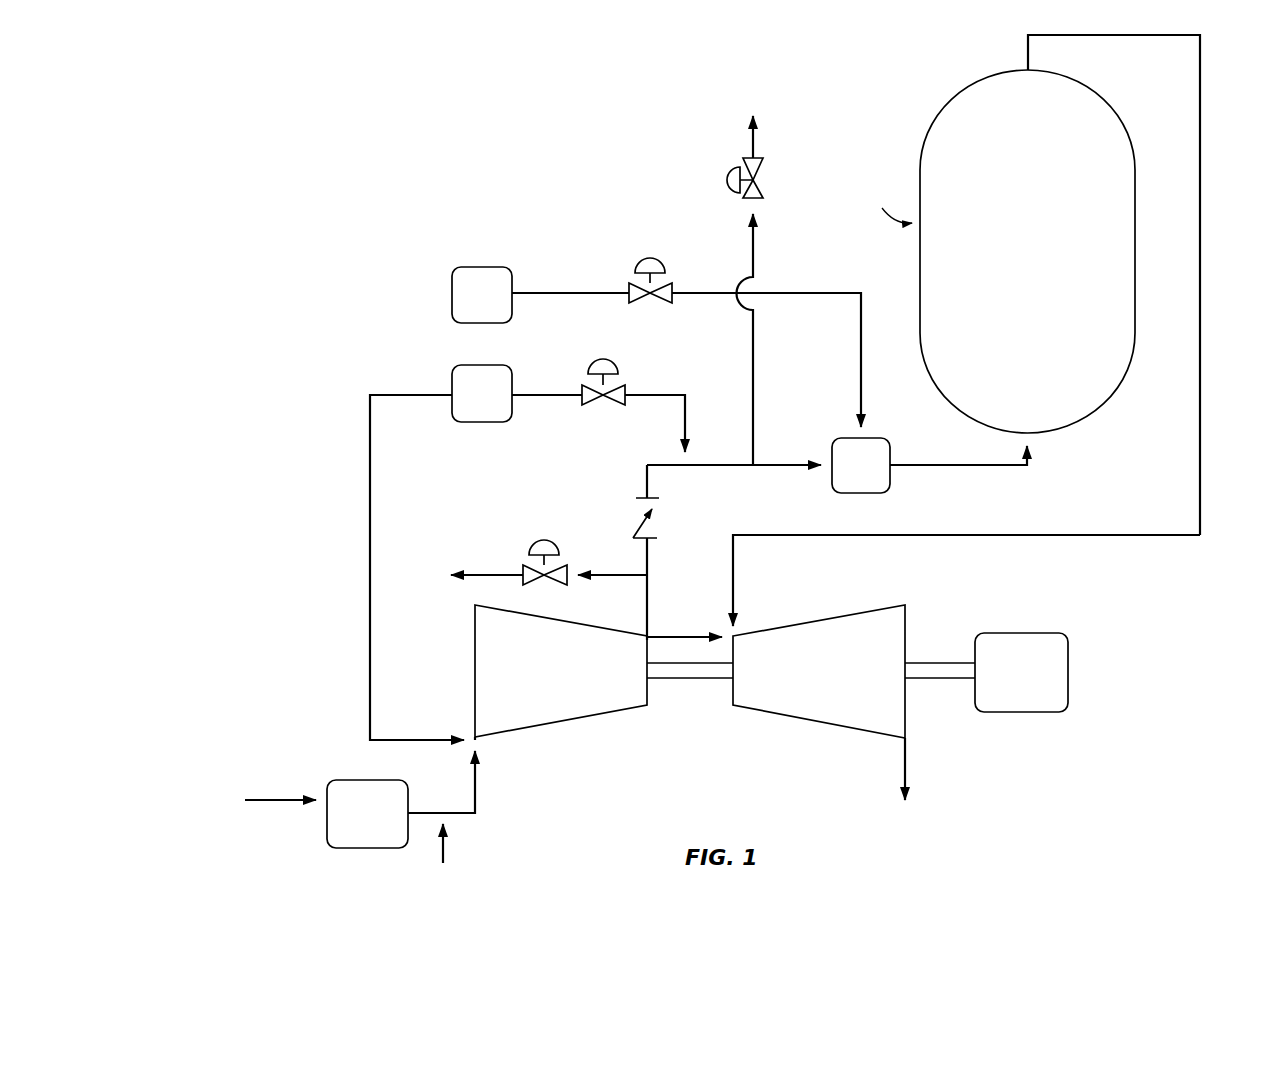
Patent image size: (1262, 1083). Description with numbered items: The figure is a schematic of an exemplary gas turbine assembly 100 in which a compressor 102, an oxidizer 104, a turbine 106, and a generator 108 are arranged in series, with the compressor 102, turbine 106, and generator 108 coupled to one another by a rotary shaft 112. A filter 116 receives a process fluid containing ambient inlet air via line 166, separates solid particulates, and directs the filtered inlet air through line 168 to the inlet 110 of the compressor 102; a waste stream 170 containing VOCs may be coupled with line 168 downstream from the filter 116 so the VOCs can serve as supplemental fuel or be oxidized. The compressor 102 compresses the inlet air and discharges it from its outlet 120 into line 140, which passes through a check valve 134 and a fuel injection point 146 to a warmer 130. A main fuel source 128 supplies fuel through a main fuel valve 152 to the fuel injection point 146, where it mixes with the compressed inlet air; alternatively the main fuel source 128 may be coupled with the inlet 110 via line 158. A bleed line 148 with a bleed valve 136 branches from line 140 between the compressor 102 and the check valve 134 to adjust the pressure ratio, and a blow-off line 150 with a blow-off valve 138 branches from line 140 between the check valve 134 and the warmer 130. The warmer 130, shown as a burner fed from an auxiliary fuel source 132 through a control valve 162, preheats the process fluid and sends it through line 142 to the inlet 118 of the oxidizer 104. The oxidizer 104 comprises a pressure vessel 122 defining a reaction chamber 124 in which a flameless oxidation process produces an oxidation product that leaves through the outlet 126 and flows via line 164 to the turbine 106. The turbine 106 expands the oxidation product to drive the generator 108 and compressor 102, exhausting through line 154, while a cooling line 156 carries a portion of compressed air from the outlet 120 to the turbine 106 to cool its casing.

The gas turbine assembly 100 is at (330, 150).
The compressor 102 is at (561, 671).
The oxidizer 104 is at (849, 195).
The turbine 106 is at (819, 671).
The generator 108 is at (1031, 660).
The inlet 110 is at (480, 742).
The rotary shaft 112 is at (690, 681).
The filter 116 is at (367, 814).
The inlet 118 is at (1033, 438).
The outlet 120 is at (645, 636).
The pressure vessel 122 is at (922, 140).
The reaction chamber 124 is at (1028, 209).
The outlet 126 is at (1026, 64).
The main fuel source 128 is at (448, 382).
The warmer 130 is at (863, 484).
The auxiliary fuel source 132 is at (484, 268).
The check valve 134 is at (628, 502).
The bleed valve 136 is at (540, 538).
The blow-off valve 138 is at (735, 170).
The line 140 is at (800, 462).
The line 142 is at (950, 462).
The fuel injection point 146 is at (683, 467).
The bleed line 148 is at (617, 572).
The blow-off line 150 is at (754, 238).
The main fuel valve 152 is at (600, 358).
The line 154 is at (906, 775).
The cooling line 156 is at (700, 632).
The line 158 is at (372, 482).
The control valve 162 is at (645, 260).
The line 164 is at (1170, 533).
The line 166 is at (293, 800).
The line 168 is at (462, 812).
The waste stream 170 is at (445, 852).